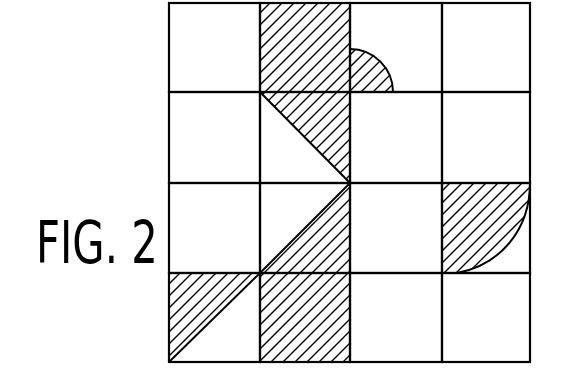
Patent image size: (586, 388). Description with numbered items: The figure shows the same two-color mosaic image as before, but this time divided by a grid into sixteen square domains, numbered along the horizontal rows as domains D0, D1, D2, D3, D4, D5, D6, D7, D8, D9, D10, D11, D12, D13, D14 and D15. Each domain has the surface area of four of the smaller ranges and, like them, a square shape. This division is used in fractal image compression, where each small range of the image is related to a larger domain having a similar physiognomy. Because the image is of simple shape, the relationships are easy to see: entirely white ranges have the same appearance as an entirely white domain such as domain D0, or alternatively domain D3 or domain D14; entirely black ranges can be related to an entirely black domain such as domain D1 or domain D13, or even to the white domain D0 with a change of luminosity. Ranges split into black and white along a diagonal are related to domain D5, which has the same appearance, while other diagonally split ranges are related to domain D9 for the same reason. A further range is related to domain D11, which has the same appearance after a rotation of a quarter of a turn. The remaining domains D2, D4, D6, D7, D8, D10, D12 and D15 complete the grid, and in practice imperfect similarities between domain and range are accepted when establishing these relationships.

The domain D0 is at (214, 47).
The domain D1 is at (349, 182).
The domain D2 is at (349, 182).
The domain D3 is at (486, 47).
The domain D4 is at (214, 137).
The domain D5 is at (349, 182).
The domain D6 is at (396, 137).
The domain D7 is at (486, 137).
The domain D8 is at (214, 228).
The domain D9 is at (349, 182).
The domain D10 is at (396, 228).
The domain D11 is at (349, 182).
The domain D12 is at (349, 182).
The domain D13 is at (349, 182).
The domain D14 is at (396, 317).
The domain D15 is at (486, 317).